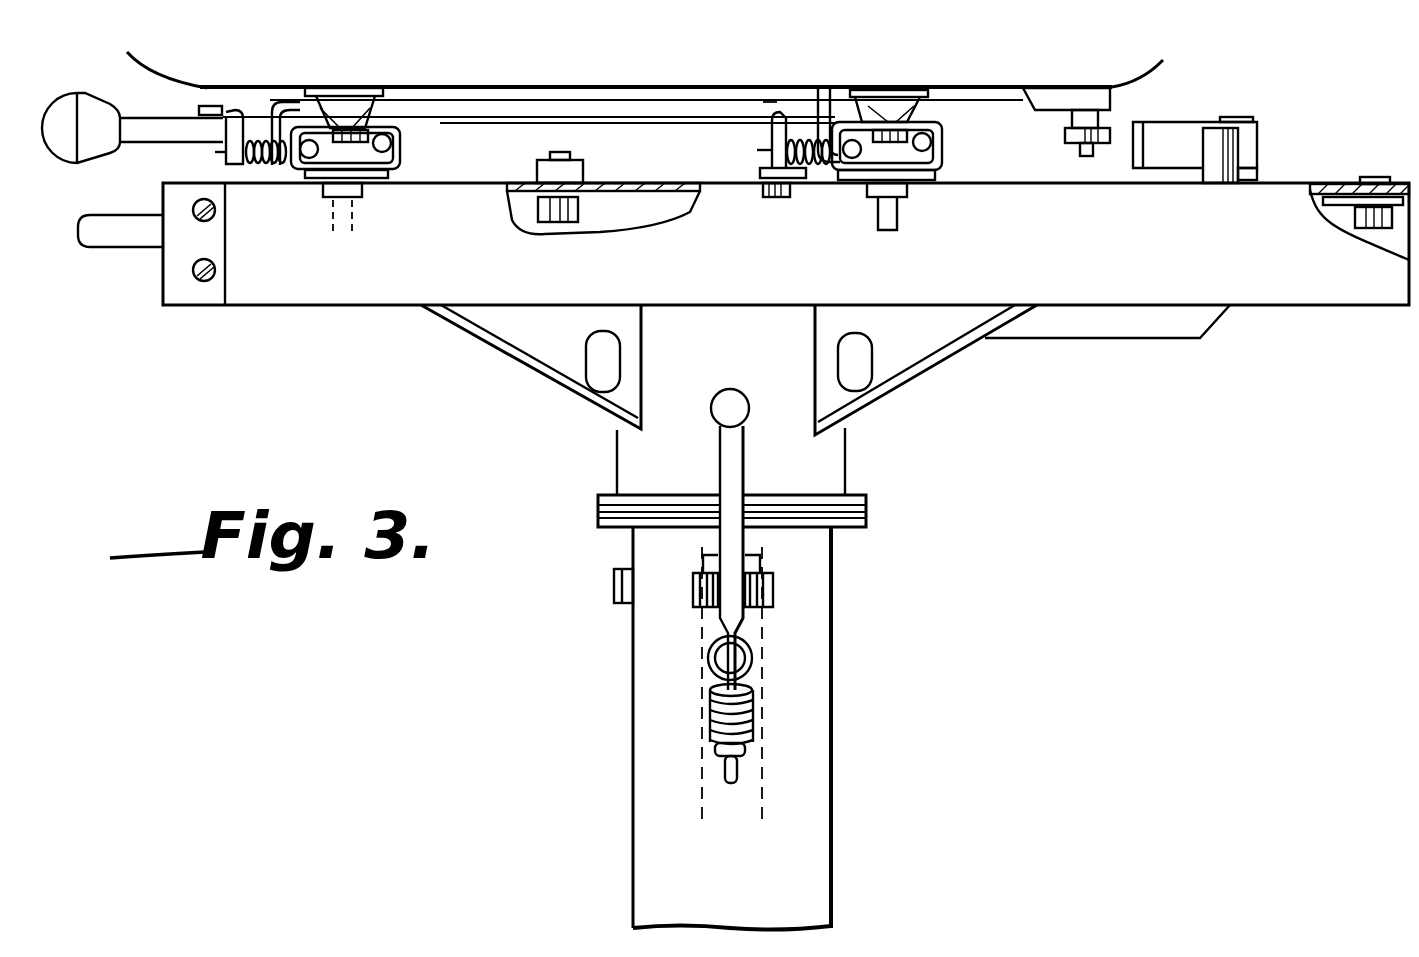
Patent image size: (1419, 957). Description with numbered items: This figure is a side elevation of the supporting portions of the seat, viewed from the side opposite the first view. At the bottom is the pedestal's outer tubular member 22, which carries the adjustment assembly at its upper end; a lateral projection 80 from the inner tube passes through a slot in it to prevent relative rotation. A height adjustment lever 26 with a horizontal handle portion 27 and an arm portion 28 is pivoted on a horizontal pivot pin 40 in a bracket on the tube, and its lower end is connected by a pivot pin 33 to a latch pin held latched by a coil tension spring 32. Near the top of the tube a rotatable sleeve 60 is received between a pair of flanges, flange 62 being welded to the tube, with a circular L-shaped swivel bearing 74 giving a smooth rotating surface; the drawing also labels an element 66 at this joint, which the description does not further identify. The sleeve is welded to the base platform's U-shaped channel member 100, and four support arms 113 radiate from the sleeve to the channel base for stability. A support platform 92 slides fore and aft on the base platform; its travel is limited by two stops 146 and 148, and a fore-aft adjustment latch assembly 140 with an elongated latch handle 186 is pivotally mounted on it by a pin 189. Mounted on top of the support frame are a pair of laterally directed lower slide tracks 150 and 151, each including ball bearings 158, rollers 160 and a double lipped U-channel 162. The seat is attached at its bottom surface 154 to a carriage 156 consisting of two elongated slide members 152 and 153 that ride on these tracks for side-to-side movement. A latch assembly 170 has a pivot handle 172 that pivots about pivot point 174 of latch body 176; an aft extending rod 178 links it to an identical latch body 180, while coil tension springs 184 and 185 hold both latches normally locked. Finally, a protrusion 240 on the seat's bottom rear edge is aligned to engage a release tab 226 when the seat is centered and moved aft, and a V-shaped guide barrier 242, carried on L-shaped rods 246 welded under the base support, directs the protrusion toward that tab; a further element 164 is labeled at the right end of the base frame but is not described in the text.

The outer tubular member 22 is at (833, 818).
The lever 26 is at (745, 478).
The horizontal handle portion 27 is at (742, 400).
The arm portion 28 is at (722, 452).
The coil tension spring 32 is at (753, 718).
The horizontal pivot pin 33 is at (710, 660).
The horizontal pivot pin 40 is at (695, 583).
The rotatable sleeve 60 is at (845, 470).
The flange 62 is at (600, 528).
The upper flange 66 is at (610, 494).
The swivel bearing 74 is at (598, 504).
The lateral projection 80 is at (630, 603).
The support platform 92 is at (248, 318).
The U-shaped channel member 100 is at (303, 307).
The support arms 113 is at (575, 350).
The fore-aft adjustment latch assembly 140 is at (147, 253).
The stop 146 is at (580, 208).
The stop 148 is at (1353, 213).
The lower slide track 150 is at (403, 148).
The lower slide track 151 is at (945, 163).
The slide member 152 is at (400, 118).
The slide member 153 is at (913, 110).
The bottom surface 154 is at (1023, 90).
The carriage 156 is at (395, 100).
The ball bearings 158 is at (318, 138).
The rollers 160 is at (940, 118).
The double lipped U-channel 162 is at (405, 163).
The flange plate 164 is at (1300, 297).
The latch assembly 170 is at (157, 117).
The pivot handle 172 is at (107, 147).
The pivot point 174 is at (218, 106).
The latch body 176 is at (272, 100).
The aft extending rod 178 is at (362, 100).
The latch body 180 is at (840, 122).
The coil tension spring 184 is at (273, 167).
The coil tension spring 185 is at (822, 183).
The latch handle 186 is at (97, 237).
The pin 189 is at (760, 192).
The tab 226 is at (1250, 176).
The protrusion 240 is at (1113, 143).
The guide barrier 242 is at (1188, 128).
The L-shaped rods 246 is at (1220, 176).